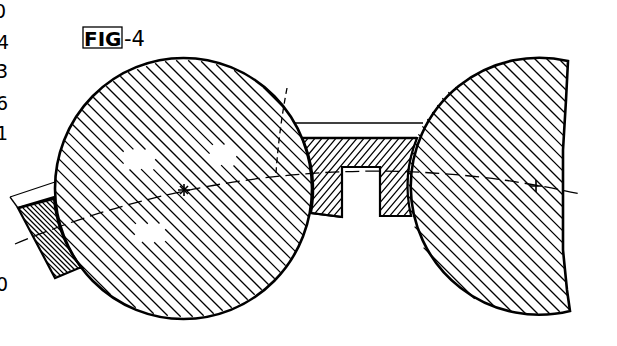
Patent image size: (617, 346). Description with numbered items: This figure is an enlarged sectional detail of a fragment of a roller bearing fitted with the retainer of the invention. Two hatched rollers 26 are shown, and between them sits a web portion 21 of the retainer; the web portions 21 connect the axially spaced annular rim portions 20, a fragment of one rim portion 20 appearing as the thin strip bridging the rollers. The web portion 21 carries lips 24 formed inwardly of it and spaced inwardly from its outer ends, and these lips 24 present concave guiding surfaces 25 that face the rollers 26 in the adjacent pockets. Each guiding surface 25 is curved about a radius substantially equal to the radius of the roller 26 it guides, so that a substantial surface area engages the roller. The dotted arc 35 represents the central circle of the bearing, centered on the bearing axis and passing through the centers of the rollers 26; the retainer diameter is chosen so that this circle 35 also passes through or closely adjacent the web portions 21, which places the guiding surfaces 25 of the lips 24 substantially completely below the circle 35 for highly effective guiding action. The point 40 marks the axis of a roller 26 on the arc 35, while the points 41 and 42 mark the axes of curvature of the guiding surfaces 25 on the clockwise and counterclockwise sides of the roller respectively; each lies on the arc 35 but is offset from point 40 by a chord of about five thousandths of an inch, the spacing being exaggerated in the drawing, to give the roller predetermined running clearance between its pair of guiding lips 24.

The rim portions 20 is at (313, 130).
The web portions 21 is at (358, 143).
The lips 24 is at (371, 214).
The guiding surfaces 25 is at (406, 162).
The rollers 26 is at (237, 78).
The dotted arc 35 is at (290, 118).
The point on the axis of roller 40 is at (182, 194).
The point on the axis of curvature of the guiding surface 41 is at (186, 190).
The point on the axis of curvature of the guiding surface 42 is at (182, 189).